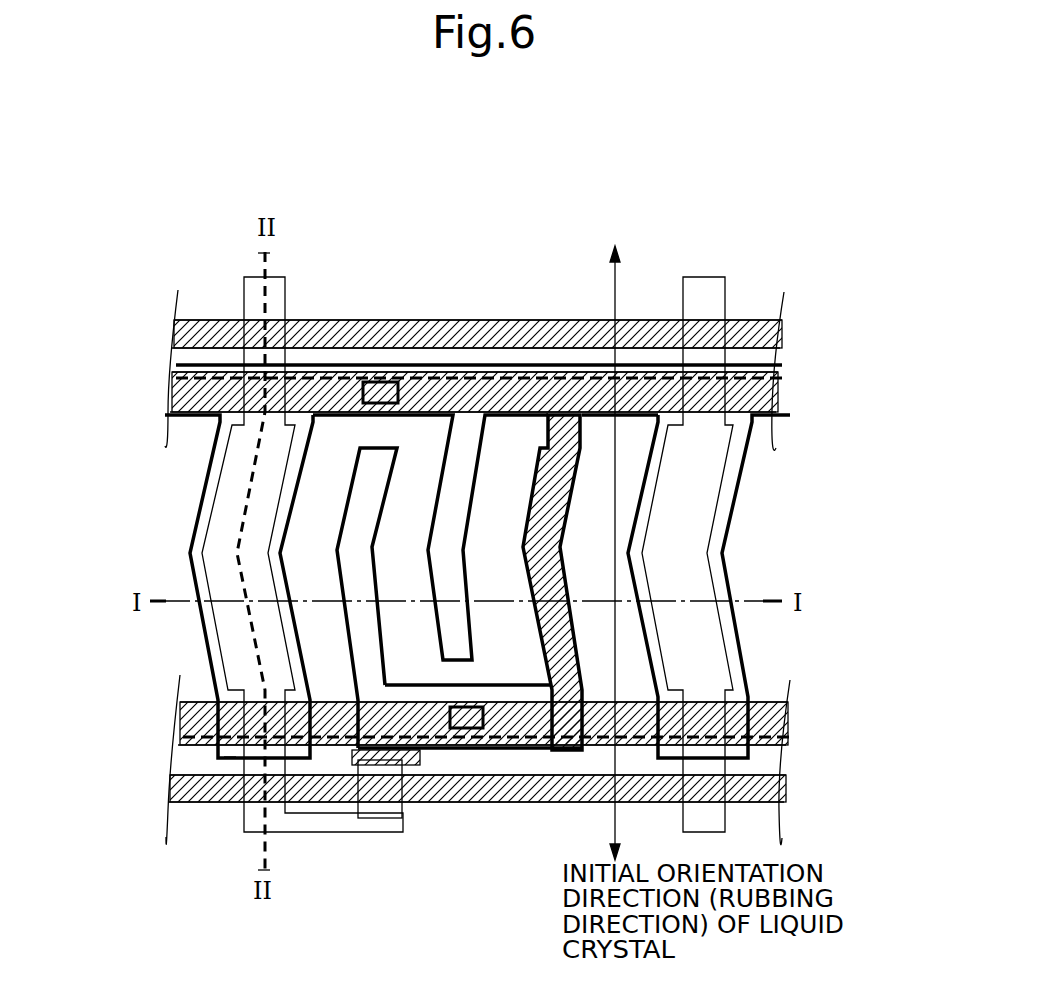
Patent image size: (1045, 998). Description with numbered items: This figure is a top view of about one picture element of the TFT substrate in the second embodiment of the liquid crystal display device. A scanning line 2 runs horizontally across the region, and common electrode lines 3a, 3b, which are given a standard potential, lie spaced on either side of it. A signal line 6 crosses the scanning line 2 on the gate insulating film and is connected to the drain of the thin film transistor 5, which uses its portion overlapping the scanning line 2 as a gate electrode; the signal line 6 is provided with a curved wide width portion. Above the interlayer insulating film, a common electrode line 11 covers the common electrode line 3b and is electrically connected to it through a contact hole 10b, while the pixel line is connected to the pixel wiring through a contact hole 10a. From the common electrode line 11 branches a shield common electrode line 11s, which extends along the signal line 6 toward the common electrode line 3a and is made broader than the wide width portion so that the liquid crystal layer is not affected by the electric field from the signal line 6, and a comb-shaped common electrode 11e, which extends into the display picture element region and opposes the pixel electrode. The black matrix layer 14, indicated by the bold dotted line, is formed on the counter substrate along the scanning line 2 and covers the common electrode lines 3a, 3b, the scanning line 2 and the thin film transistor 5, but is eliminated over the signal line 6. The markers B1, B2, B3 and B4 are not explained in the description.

The scanning line 2 is at (180, 334).
The common electrode line 3a is at (183, 716).
The common electrode line 3b is at (172, 396).
The thin film transistor 5 is at (377, 762).
The signal line 6 is at (284, 283).
The contact hole 10a is at (472, 730).
The contact hole 10b is at (385, 381).
The common electrode line 11 is at (503, 364).
The common electrode 11e is at (452, 553).
The shield common electrode line 11s is at (208, 650).
The black matrix layer 14 is at (780, 374).
The boundary B1 is at (263, 253).
The boundary B2 is at (262, 364).
The boundary B3 is at (230, 757).
The boundary B4 is at (262, 870).